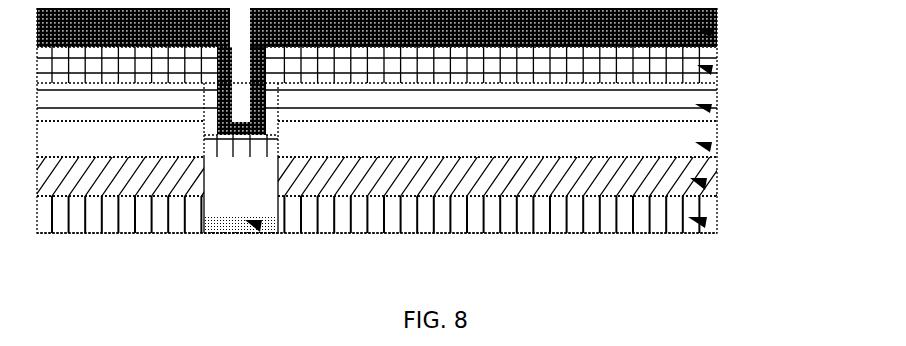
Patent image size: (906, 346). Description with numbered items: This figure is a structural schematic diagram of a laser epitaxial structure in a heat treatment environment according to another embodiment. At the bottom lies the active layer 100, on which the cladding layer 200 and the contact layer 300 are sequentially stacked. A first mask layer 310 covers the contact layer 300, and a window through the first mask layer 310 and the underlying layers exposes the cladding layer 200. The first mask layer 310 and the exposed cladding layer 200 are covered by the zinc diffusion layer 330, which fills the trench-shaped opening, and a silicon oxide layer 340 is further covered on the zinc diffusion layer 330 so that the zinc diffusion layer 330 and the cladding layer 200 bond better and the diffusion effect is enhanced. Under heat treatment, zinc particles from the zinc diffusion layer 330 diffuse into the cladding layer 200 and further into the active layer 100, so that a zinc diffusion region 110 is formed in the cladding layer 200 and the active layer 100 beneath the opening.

The active layer 100 is at (712, 233).
The zinc diffusion region 110 is at (260, 230).
The cladding layer 200 is at (716, 210).
The contact layer 300 is at (718, 160).
The first mask layer 310 is at (718, 130).
The zinc diffusion layer 330 is at (718, 88).
The silicon oxide layer 340 is at (718, 48).